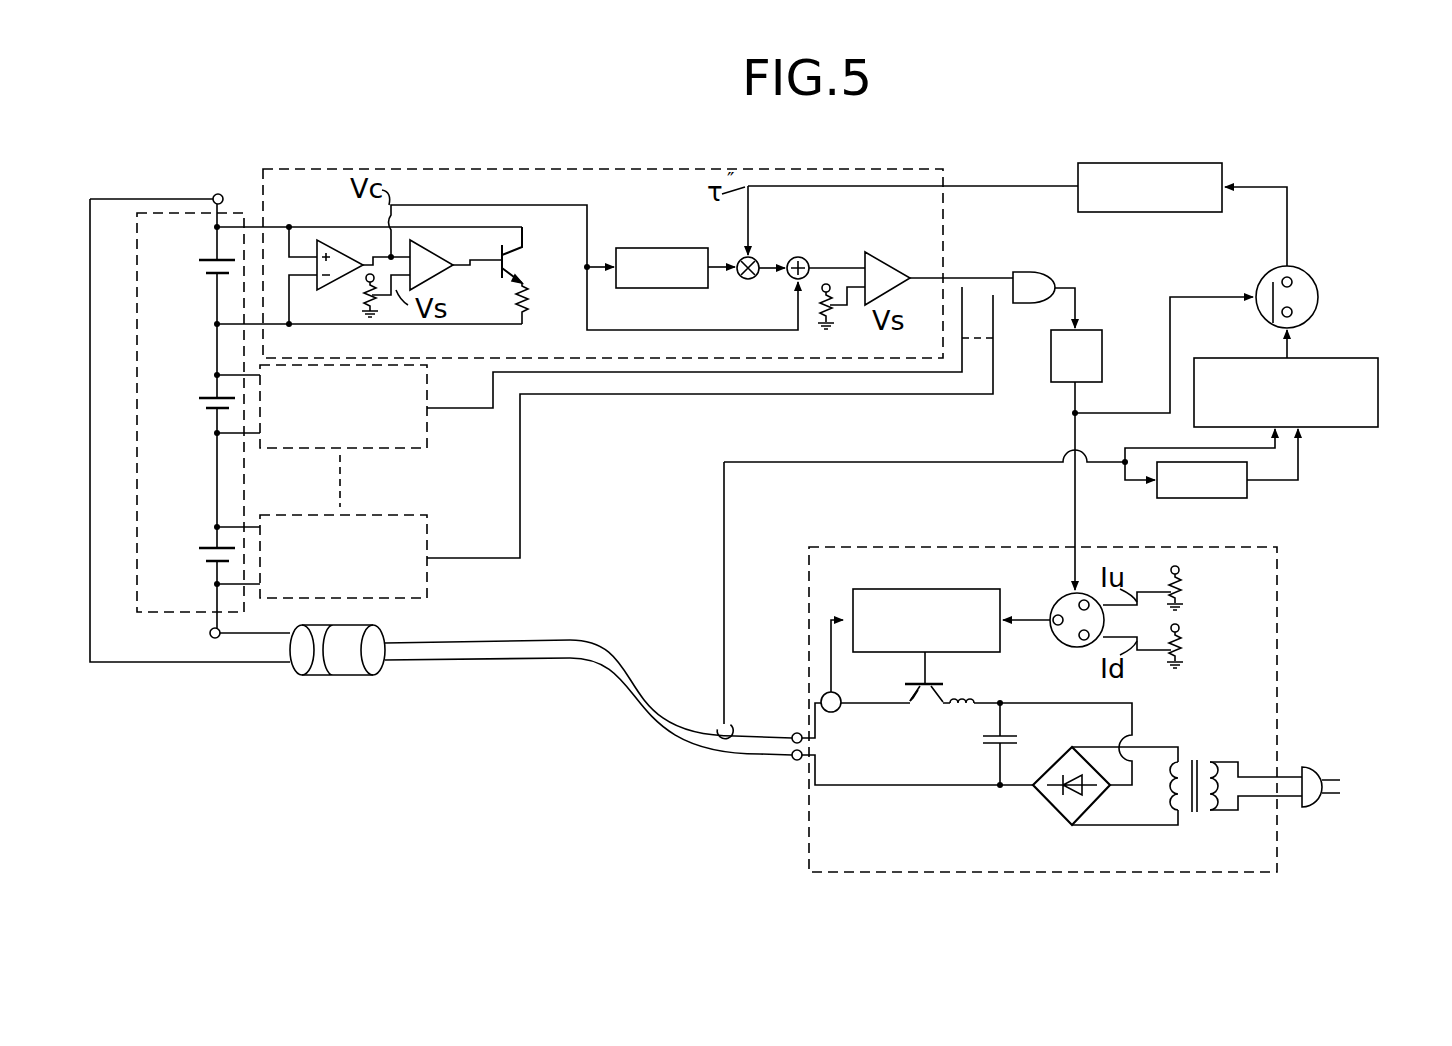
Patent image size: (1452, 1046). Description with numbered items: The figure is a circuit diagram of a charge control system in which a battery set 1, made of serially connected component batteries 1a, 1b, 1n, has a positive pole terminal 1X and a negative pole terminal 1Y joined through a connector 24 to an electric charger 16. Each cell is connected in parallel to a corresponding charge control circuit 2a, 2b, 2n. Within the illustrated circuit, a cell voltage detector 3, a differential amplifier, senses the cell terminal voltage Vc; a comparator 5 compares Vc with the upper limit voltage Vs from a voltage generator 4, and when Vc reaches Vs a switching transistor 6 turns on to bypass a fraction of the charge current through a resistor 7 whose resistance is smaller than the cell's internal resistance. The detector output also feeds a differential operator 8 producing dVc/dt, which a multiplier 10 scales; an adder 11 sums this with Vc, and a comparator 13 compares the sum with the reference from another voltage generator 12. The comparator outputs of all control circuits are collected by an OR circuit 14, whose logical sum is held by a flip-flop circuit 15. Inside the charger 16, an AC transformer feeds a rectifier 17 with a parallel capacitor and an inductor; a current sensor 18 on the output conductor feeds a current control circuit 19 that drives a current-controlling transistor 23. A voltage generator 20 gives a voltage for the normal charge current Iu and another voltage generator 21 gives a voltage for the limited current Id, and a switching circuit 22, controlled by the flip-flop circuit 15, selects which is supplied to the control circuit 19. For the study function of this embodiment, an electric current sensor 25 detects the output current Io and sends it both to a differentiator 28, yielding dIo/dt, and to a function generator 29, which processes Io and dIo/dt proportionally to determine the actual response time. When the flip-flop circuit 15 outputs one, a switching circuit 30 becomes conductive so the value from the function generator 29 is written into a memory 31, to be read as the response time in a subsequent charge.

The battery set 1 is at (137, 269).
The positive pole terminal 1X is at (213, 195).
The negative pole terminal 1Y is at (210, 634).
The component battery 1a is at (198, 276).
The component battery 1b is at (198, 408).
The component battery 1n is at (198, 560).
The charge control circuit 2a is at (944, 232).
The charge control circuit 2b is at (428, 438).
The charge control circuit 2n is at (428, 588).
The cell voltage detector 3 is at (340, 258).
The voltage generator 4 is at (360, 290).
The comparator 5 is at (433, 257).
The switching transistor 6 is at (525, 257).
The resistor 7 is at (531, 302).
The differential operator 8 is at (643, 248).
The multiplier 10 is at (748, 280).
The adder 11 is at (818, 250).
The voltage generator 12 is at (833, 318).
The comparator 13 is at (905, 258).
The OR circuit 14 is at (1047, 258).
The flip-flop circuit 15 is at (1104, 352).
The electric charger 16 is at (1280, 660).
The rectifier 17 is at (1049, 804).
The current sensor 18 is at (843, 710).
The current control circuit 19 is at (946, 653).
The voltage generator 20 is at (1190, 590).
The voltage generator 21 is at (1190, 648).
The switching circuit 22 is at (1056, 642).
The current-controlling transistor 23 is at (927, 705).
The connector 24 is at (326, 675).
The electric current sensor 25 is at (720, 726).
The differentiator 28 is at (1159, 498).
The function generator 29 is at (1380, 391).
The switching circuit 30 is at (1259, 281).
The memory 31 is at (1183, 212).